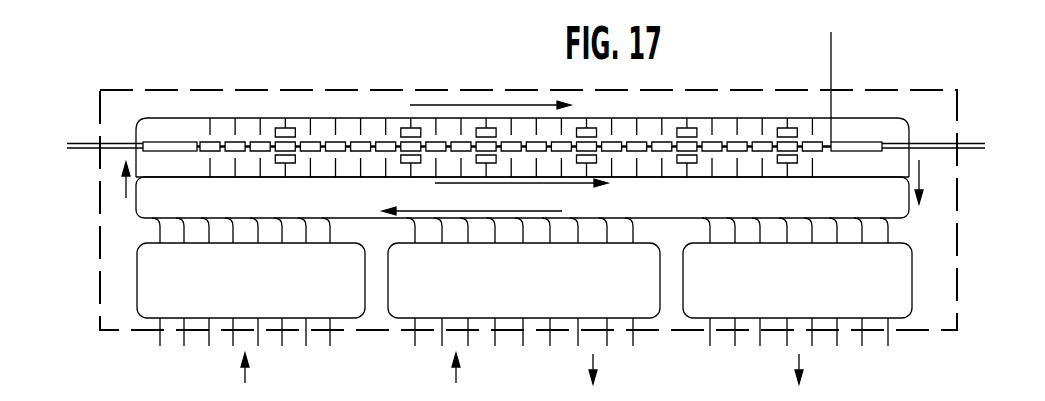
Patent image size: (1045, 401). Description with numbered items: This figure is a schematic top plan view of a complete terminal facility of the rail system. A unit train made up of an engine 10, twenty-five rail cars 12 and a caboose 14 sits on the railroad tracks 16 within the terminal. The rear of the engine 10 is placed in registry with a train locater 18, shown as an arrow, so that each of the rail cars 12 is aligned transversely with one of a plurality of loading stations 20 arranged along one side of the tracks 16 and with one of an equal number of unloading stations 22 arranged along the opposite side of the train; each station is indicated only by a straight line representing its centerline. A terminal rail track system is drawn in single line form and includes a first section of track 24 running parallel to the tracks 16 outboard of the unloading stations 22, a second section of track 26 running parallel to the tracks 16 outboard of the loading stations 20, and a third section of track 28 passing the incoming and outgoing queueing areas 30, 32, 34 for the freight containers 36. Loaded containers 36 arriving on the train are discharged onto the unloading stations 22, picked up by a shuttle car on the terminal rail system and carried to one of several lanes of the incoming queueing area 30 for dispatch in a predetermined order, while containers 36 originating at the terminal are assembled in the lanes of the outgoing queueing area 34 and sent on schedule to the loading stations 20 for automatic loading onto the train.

The engine 10 is at (878, 142).
The rail cars 12 is at (331, 146).
The caboose 14 is at (160, 147).
The railroad tracks 16 is at (90, 143).
The train locater 18 is at (831, 68).
The loading stations 20 is at (229, 177).
The unloading stations 22 is at (212, 128).
The first section of track 24 is at (348, 117).
The second section of track 26 is at (770, 177).
The third section of track 28 is at (698, 218).
The incoming queueing area 30 is at (893, 301).
The queueing area 32 is at (637, 298).
The outgoing queueing area 34 is at (333, 294).
The freight containers 36 is at (407, 128).